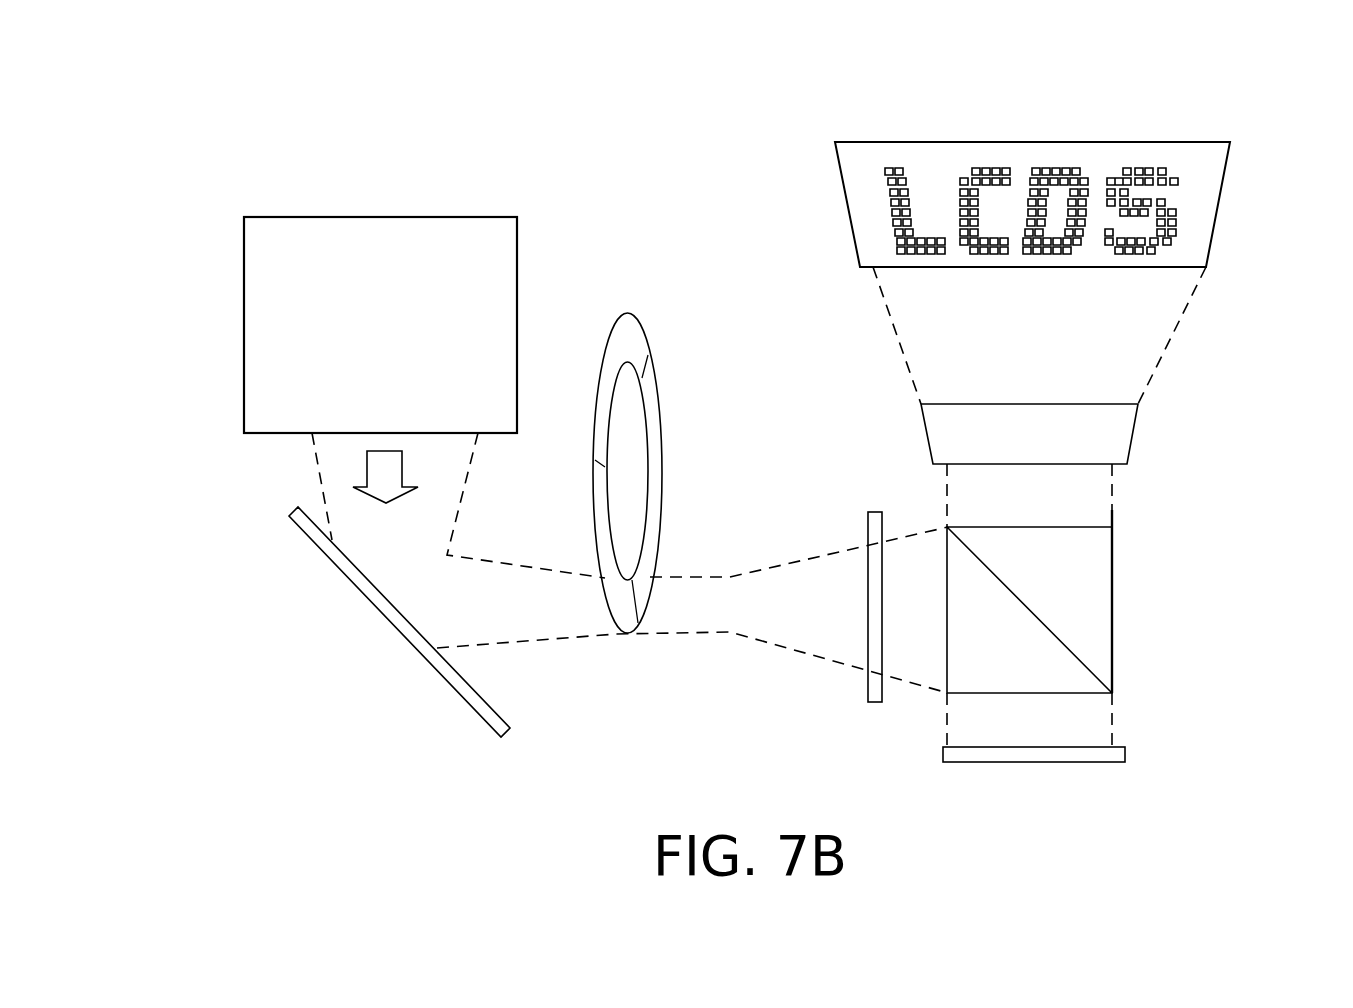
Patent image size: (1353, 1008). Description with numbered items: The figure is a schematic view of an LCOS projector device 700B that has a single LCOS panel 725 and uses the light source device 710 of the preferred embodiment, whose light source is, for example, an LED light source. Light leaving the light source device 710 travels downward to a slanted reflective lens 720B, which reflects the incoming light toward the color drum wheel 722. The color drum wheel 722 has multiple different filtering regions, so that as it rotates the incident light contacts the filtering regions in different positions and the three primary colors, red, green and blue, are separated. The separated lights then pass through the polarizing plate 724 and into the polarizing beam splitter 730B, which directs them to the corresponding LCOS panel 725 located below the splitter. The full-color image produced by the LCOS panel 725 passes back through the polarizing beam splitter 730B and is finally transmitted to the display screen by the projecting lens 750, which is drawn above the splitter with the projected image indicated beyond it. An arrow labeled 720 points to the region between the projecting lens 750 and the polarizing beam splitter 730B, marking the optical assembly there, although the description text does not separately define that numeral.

The LCOS projector device 700B is at (145, 87).
The light source device 710 is at (402, 217).
The light valve / projection unit 720 is at (1171, 498).
The reflective lens 720B is at (398, 633).
The color drum wheel 722 is at (635, 311).
The polarizing plate 724 is at (873, 510).
The polarizing beam splitter 730B is at (1112, 598).
The LCOS panel 725 is at (1125, 752).
The projecting lens 750 is at (1135, 432).